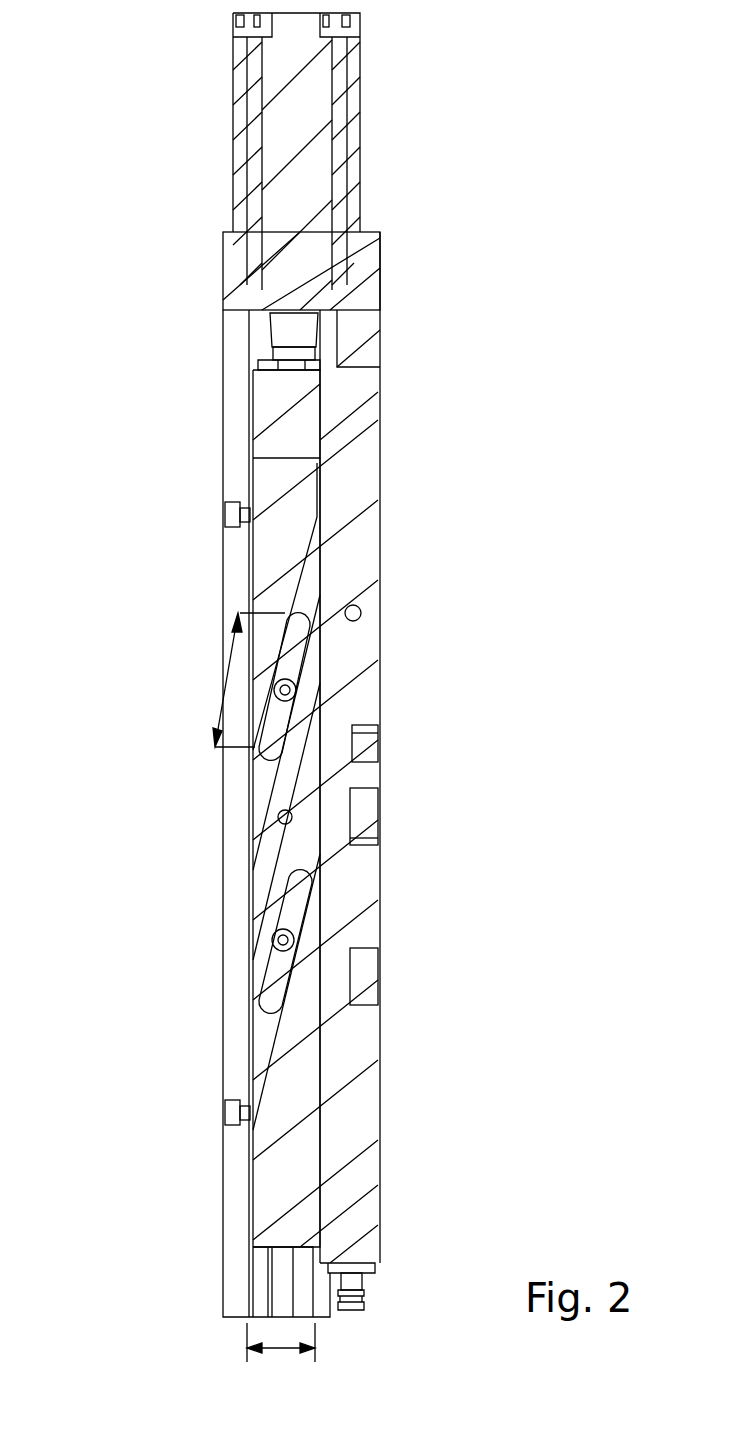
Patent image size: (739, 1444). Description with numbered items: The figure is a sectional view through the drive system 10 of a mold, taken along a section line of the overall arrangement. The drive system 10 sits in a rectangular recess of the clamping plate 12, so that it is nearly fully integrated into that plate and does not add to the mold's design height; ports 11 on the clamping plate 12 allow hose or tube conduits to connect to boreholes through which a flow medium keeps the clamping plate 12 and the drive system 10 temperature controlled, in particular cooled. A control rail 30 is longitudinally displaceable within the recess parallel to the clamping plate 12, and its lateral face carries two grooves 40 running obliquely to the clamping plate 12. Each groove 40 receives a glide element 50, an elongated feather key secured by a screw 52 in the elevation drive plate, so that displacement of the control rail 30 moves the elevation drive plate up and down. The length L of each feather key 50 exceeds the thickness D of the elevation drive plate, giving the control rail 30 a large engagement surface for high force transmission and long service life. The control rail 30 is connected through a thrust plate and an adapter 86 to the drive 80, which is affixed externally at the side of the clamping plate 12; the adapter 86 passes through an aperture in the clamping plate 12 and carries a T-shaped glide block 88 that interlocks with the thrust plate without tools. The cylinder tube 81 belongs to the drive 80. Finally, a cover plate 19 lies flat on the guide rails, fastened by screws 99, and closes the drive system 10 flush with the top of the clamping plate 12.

The drive system 10 is at (62, 173).
The port 11 is at (352, 1283).
The clamping plate 12 is at (368, 240).
The cover plate 19 is at (237, 427).
The control rail 30 is at (305, 430).
The groove 40 is at (310, 580).
The glide element 50 is at (300, 665).
The screw 52 is at (300, 690).
The drive 80 is at (305, 175).
The cylinder tube 81 is at (253, 123).
The adapter 86 is at (295, 333).
The glide block 88 is at (298, 355).
The screw 99 is at (232, 514).
The length L is at (232, 672).
The thickness D is at (282, 1345).